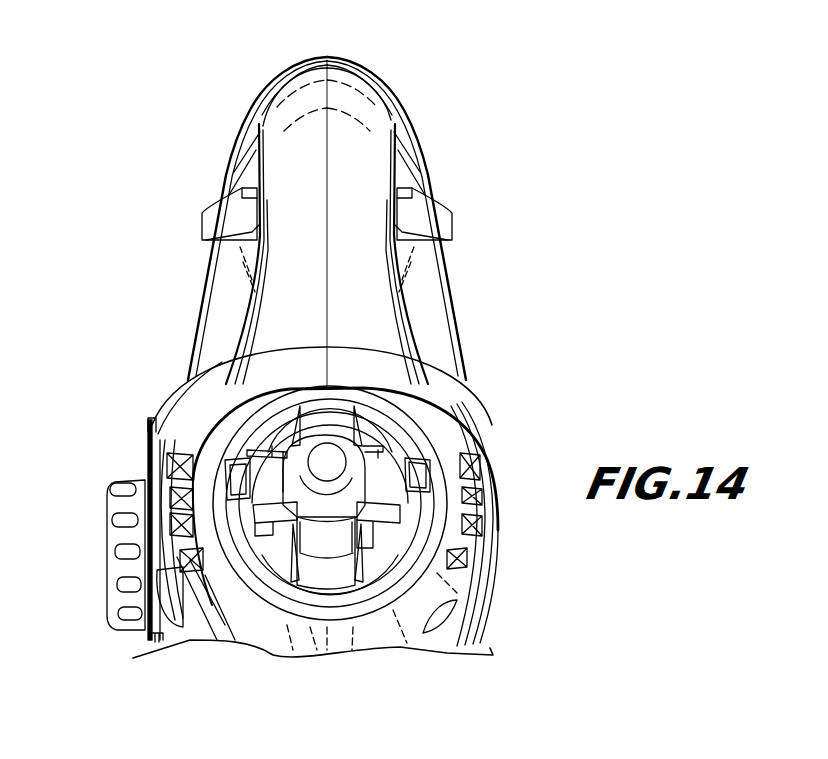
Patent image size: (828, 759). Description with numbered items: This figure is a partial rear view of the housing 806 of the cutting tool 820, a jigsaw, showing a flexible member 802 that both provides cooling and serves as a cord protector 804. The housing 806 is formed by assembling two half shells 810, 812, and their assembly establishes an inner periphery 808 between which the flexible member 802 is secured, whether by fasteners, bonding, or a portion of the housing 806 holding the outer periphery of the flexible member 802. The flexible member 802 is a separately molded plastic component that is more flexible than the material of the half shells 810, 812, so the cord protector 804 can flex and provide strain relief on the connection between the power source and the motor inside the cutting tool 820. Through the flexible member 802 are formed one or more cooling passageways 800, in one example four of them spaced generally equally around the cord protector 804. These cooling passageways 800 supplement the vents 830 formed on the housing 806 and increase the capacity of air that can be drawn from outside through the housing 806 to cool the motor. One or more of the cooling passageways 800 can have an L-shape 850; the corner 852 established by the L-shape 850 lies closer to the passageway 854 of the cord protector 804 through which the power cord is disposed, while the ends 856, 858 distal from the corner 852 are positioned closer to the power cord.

The cutting tool 820 is at (366, 58).
The housing half shell 810 is at (267, 123).
The housing half shell 812 is at (383, 113).
The cooling passageway 800 is at (280, 447).
The corner 852 is at (300, 510).
The end of the L-shape 858 is at (254, 528).
The passageway 854 is at (333, 461).
The cord protector 804 is at (343, 483).
The vents 830 is at (106, 516).
The flexible member 802 is at (266, 536).
The L-shape 850 is at (200, 600).
The end of the L-shape 856 is at (293, 545).
The inner periphery 808 is at (304, 624).
The housing 806 is at (458, 628).